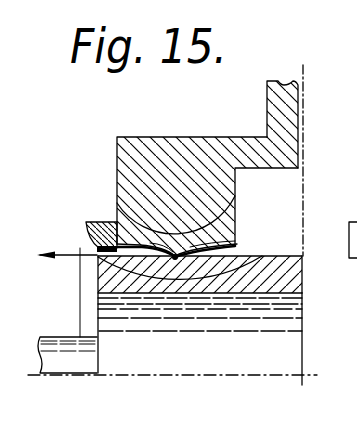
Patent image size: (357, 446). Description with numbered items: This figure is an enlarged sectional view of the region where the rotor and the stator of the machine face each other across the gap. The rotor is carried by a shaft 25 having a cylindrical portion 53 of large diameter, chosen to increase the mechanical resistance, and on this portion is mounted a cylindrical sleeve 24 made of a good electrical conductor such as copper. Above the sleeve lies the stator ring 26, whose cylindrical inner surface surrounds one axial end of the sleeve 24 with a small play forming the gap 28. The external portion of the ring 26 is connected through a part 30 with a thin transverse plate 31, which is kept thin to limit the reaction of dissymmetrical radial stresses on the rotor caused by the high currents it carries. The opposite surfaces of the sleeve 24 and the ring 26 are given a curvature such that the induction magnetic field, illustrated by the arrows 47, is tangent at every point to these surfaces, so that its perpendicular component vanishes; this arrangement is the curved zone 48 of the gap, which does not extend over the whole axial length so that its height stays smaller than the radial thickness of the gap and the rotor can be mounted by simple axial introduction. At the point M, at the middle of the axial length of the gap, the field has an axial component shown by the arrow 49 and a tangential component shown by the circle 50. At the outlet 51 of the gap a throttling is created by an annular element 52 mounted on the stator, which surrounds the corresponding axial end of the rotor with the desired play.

The cylindrical sleeve 24 is at (287, 278).
The shaft 25 is at (68, 360).
The ring 26 is at (178, 190).
The gap 28 is at (237, 256).
The part 30 is at (232, 153).
The thin transverse plate 31 is at (275, 103).
The arrows 47 is at (113, 203).
The curved zone 48 is at (190, 249).
The arrow 49 is at (65, 257).
The circle 50 is at (176, 259).
The outlet 51 is at (105, 219).
The annular element 52 is at (86, 233).
The cylindrical portion 53 is at (287, 350).
The point M is at (174, 259).